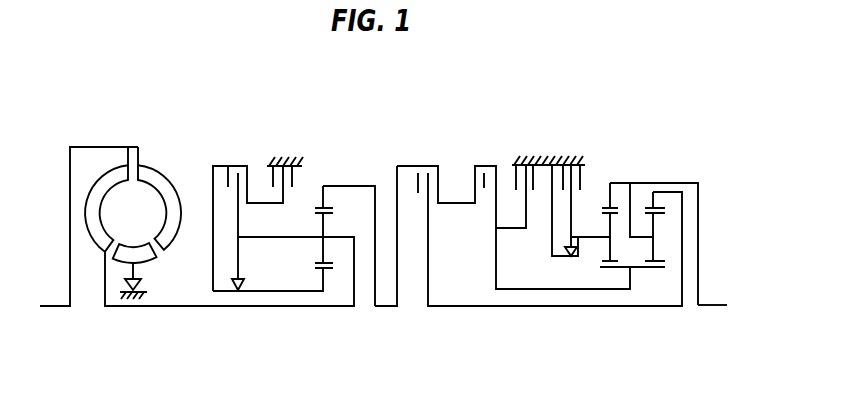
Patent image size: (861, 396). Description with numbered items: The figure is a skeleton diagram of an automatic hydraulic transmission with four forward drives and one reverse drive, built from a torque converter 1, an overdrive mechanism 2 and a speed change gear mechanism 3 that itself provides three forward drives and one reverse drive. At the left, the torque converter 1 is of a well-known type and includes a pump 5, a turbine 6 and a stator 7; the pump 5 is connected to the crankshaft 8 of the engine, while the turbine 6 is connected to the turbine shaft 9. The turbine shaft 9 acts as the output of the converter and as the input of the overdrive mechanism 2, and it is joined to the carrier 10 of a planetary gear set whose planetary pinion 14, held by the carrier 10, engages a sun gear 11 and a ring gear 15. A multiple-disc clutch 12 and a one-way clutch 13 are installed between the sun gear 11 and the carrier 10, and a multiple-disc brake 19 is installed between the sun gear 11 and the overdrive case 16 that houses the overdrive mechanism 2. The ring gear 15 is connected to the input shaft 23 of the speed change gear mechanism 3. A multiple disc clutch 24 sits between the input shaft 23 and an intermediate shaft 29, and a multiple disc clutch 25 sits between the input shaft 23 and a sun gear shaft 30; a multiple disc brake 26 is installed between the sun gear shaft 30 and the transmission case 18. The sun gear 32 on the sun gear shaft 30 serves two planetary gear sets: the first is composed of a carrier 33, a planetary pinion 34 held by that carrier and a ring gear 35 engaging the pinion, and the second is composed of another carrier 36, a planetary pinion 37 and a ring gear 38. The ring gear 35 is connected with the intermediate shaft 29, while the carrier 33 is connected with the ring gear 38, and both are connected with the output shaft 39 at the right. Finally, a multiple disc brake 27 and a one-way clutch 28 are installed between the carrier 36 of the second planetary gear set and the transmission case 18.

The torque converter 1 is at (131, 146).
The overdrive mechanism 2 is at (300, 153).
The speed change gear mechanism 3 is at (574, 153).
The pump 5 is at (167, 183).
The turbine 6 is at (110, 175).
The stator 7 is at (147, 258).
The crankshaft 8 is at (45, 306).
The turbine shaft 9 is at (263, 308).
The carrier 10 is at (348, 237).
The sun gear 11 is at (317, 270).
The multiple-disc clutch 12 is at (237, 165).
The one-way clutch 13 is at (245, 277).
The planetary pinion 14 is at (318, 213).
The ring gear 15 is at (322, 205).
The overdrive case 16 is at (277, 157).
The transmission case 18 is at (528, 163).
The multiple-disc brake 19 is at (302, 168).
The input shaft 23 is at (380, 308).
The multiple disc clutch 24 is at (433, 165).
The multiple disc clutch 25 is at (487, 165).
The multiple disc brake 26 is at (532, 172).
The multiple disc brake 27 is at (584, 170).
The one-way clutch 28 is at (564, 255).
The intermediate shaft 29 is at (487, 308).
The sun gear shaft 30 is at (508, 289).
The sun gear 32 is at (640, 270).
The carrier 33 is at (638, 203).
The planetary pinion 34 is at (658, 214).
The ring gear 35 is at (660, 199).
The carrier 36 is at (570, 216).
The planetary pinion 37 is at (605, 251).
The ring gear 38 is at (613, 203).
The output shaft 39 is at (710, 307).